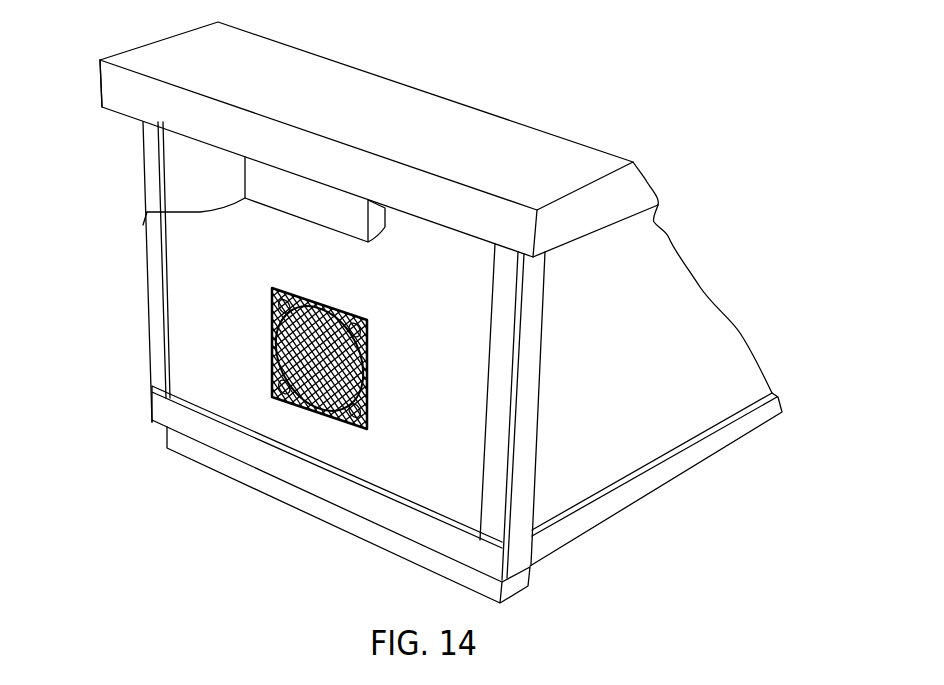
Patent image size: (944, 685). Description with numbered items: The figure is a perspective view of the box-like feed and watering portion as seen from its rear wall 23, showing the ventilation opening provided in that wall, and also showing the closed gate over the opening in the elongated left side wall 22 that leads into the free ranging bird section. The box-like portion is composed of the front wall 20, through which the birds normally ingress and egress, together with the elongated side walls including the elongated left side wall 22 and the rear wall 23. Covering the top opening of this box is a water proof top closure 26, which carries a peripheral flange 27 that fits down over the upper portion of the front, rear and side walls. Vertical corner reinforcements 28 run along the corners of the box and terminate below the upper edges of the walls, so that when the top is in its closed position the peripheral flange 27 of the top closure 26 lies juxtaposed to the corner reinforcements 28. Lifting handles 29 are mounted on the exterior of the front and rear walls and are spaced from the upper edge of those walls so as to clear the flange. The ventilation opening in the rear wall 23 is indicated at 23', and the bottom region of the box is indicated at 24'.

The front wall 20 is at (457, 317).
The elongated left side wall 22 is at (697, 349).
The rear wall 23 is at (440, 482).
The screened vent 23' is at (320, 397).
The base rail 24' is at (348, 515).
The water proof top closure 26 is at (352, 105).
The peripheral flange 27 is at (175, 110).
The corner reinforcements 28 is at (145, 305).
The lifting handles 29 is at (147, 212).